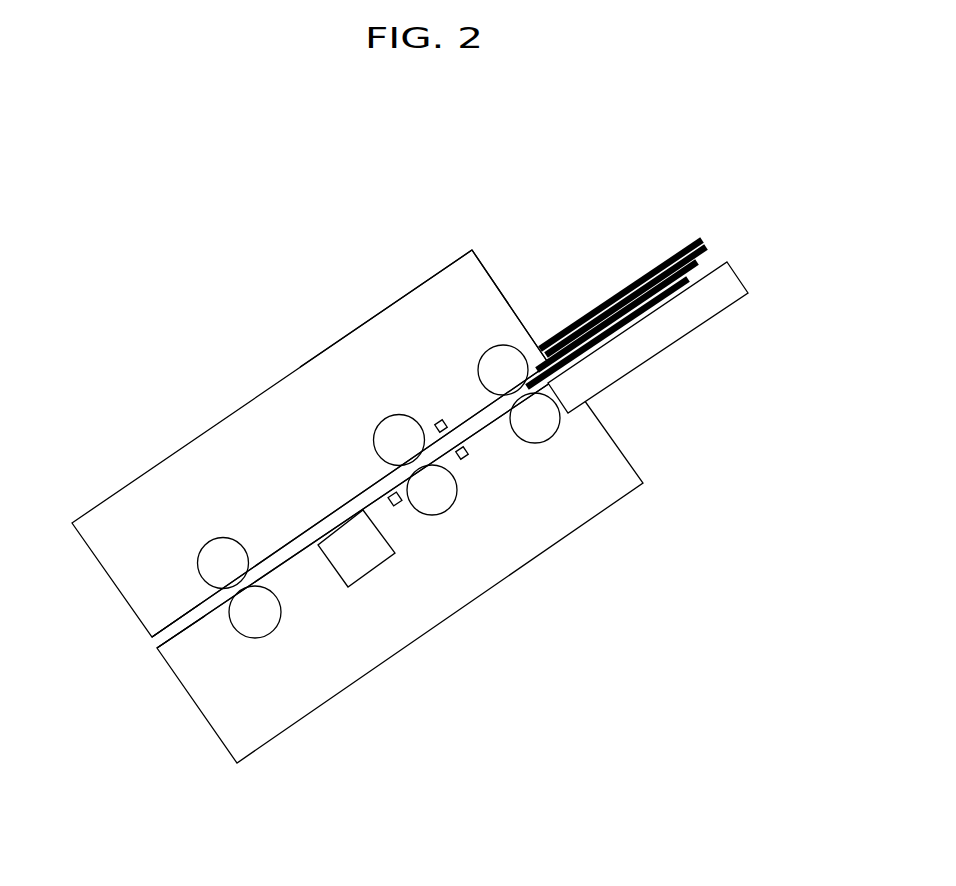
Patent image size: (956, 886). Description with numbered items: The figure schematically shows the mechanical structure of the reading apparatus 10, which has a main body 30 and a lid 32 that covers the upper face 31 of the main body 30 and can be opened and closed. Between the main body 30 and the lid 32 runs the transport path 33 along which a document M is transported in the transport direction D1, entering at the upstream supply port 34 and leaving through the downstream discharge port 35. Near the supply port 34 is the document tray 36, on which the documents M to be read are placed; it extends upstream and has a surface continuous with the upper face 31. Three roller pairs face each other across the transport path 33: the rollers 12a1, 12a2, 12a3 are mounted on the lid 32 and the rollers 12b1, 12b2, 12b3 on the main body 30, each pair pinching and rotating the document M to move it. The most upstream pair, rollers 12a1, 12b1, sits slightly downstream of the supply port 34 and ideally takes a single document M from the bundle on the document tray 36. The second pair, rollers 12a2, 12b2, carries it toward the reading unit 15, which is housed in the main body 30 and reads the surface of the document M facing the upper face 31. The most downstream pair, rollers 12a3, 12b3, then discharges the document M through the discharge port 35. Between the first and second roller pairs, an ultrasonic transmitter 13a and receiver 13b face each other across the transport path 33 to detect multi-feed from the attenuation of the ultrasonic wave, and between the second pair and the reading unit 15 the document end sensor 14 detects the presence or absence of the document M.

The reading apparatus 10 is at (335, 325).
The lid 32 is at (432, 277).
The supply port 34 is at (540, 340).
The transport path 33 is at (350, 560).
The main body 30 is at (634, 470).
The upper face 31 is at (382, 515).
The discharge port 35 is at (141, 643).
The document tray 36 is at (739, 280).
The document M is at (699, 238).
The roller 12a1 is at (478, 355).
The roller 12b1 is at (557, 440).
The roller 12a2 is at (378, 425).
The roller 12b2 is at (442, 515).
The roller 12a3 is at (225, 538).
The roller 12b3 is at (253, 638).
The transmitter 13a is at (439, 419).
The receiver 13b is at (466, 456).
The document end sensor 14 is at (400, 507).
The reading unit 15 is at (383, 563).
The transport direction D1 is at (337, 467).